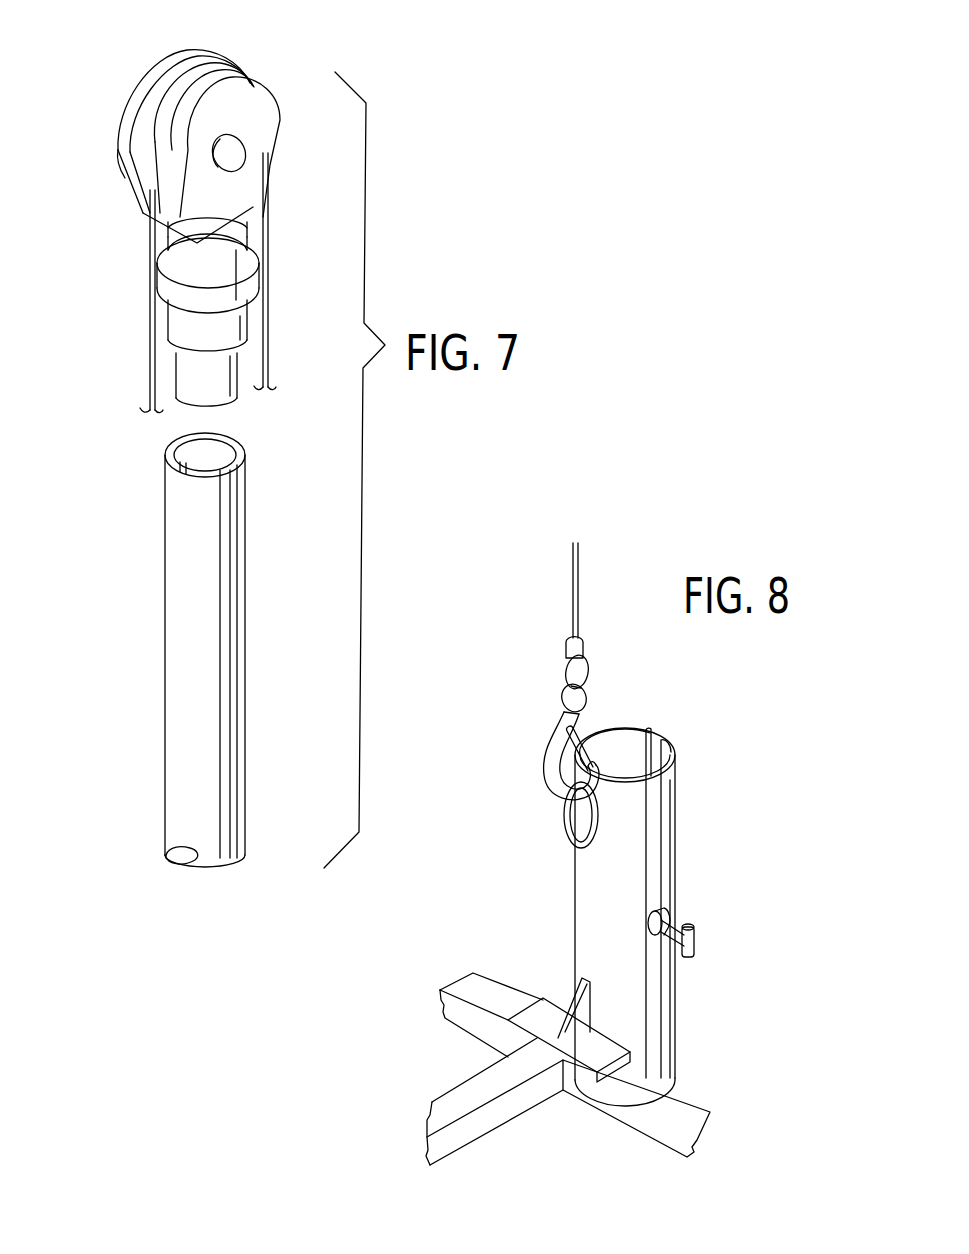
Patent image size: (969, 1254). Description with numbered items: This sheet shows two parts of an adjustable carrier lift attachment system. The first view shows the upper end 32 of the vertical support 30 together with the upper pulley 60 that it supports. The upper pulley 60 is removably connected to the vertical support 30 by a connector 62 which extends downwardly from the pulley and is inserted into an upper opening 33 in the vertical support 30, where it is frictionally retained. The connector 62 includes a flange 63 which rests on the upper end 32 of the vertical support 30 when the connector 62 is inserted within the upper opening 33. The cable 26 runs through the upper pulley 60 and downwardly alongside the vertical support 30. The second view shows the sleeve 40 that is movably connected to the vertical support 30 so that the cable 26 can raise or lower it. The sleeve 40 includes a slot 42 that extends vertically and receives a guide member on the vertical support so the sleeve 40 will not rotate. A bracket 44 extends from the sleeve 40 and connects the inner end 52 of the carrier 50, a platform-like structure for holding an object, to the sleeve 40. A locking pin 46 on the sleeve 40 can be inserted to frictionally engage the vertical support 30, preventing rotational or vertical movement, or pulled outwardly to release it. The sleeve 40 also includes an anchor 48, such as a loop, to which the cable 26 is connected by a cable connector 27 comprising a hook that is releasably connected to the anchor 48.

In FIG. 7, the cable 26 is at (268, 240).
In FIG. 8, the cable 26 is at (573, 575).
In FIG. 8, the cable connector 27 is at (550, 752).
In FIG. 7, the vertical support 30 is at (183, 622).
In FIG. 7, the upper end 32 is at (168, 462).
In FIG. 7, the upper opening 33 is at (220, 455).
In FIG. 8, the sleeve 40 is at (652, 833).
In FIG. 8, the slot 42 is at (655, 745).
In FIG. 8, the bracket 44 is at (610, 1050).
In FIG. 8, the locking pin 46 is at (698, 930).
In FIG. 8, the anchor 48 is at (565, 825).
In FIG. 8, the carrier 50 is at (515, 1100).
In FIG. 8, the inner end 52 is at (490, 975).
In FIG. 7, the upper pulley 60 is at (258, 105).
In FIG. 7, the connector 62 is at (180, 328).
In FIG. 7, the flange 63 is at (165, 292).